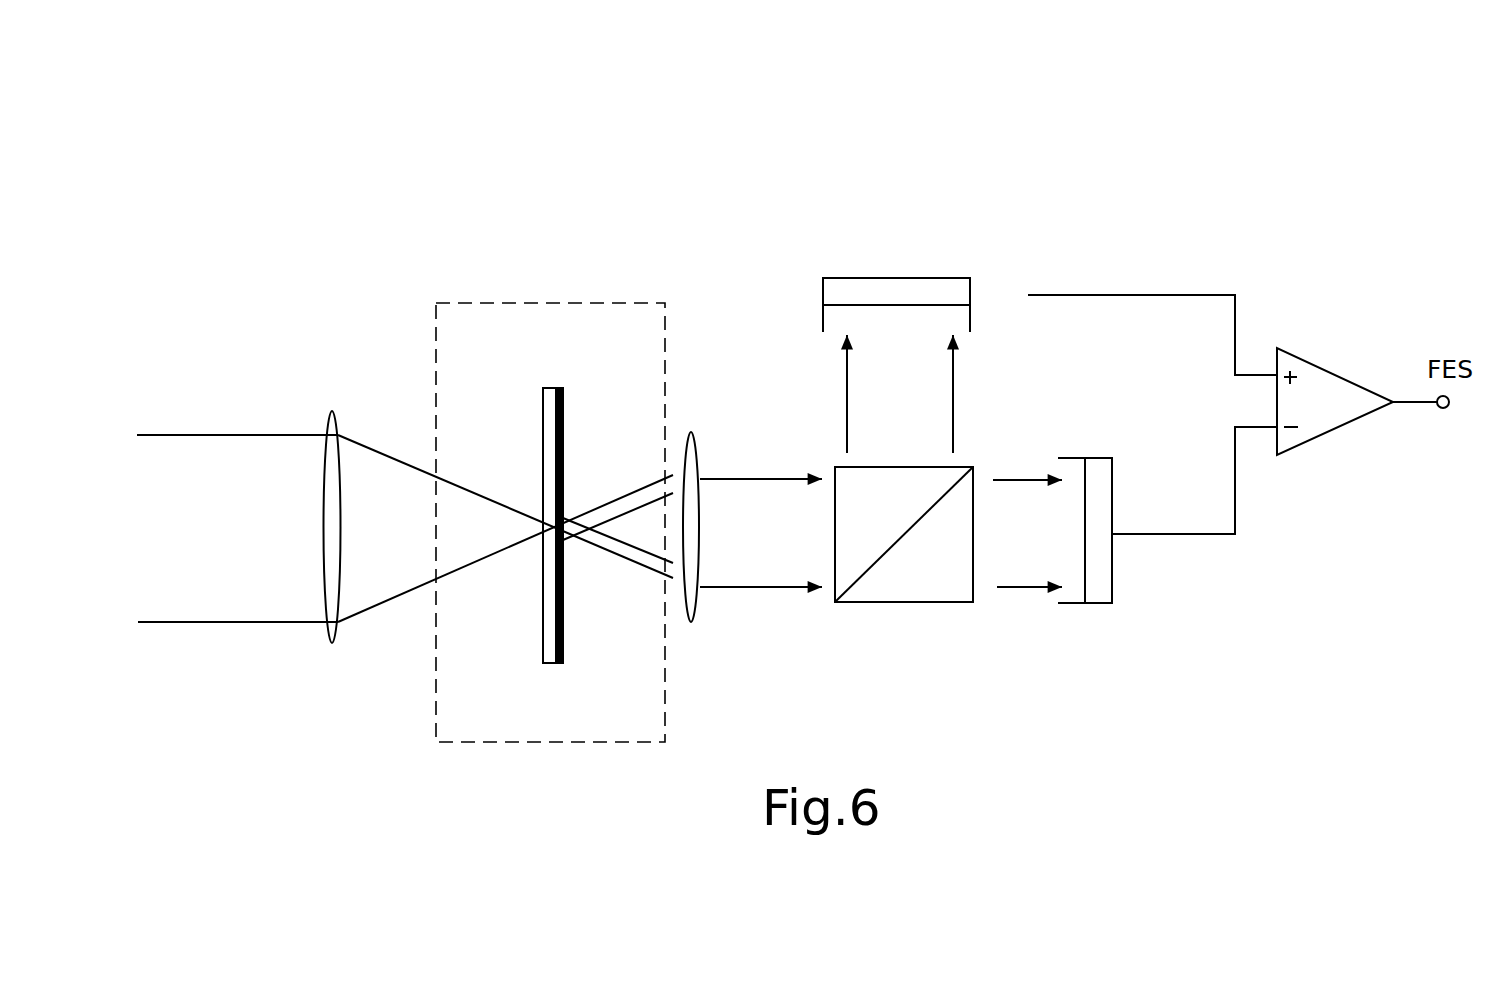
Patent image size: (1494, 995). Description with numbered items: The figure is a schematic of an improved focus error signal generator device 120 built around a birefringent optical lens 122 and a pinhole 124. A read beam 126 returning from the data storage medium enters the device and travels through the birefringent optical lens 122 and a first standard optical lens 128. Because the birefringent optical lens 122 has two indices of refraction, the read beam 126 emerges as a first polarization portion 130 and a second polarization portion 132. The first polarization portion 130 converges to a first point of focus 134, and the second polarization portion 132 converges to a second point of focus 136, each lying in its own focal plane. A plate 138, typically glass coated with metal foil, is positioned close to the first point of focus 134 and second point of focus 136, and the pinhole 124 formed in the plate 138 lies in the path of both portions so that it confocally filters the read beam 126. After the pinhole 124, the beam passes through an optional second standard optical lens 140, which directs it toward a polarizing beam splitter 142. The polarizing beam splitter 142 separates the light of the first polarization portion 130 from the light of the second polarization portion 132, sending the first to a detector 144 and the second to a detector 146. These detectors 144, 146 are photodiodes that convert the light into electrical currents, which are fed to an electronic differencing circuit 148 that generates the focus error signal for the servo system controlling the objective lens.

The focus error signal generator device 120 is at (1182, 215).
The birefringent optical lens 122 is at (334, 432).
The pinhole 124 is at (548, 408).
The read beam 126 is at (578, 535).
The first standard optical lens 128 is at (207, 432).
The first polarization portion 130 is at (548, 522).
The second polarization portion 132 is at (585, 522).
The first point of focus 134 is at (566, 620).
The second point of focus 136 is at (692, 433).
The plate 138 is at (893, 575).
The second standard optical lens 140 is at (955, 393).
The polarizing beam splitter 142 is at (997, 587).
The detector 144 is at (958, 238).
The detector 146 is at (1112, 568).
The electronic differencing circuit 148 is at (1322, 408).